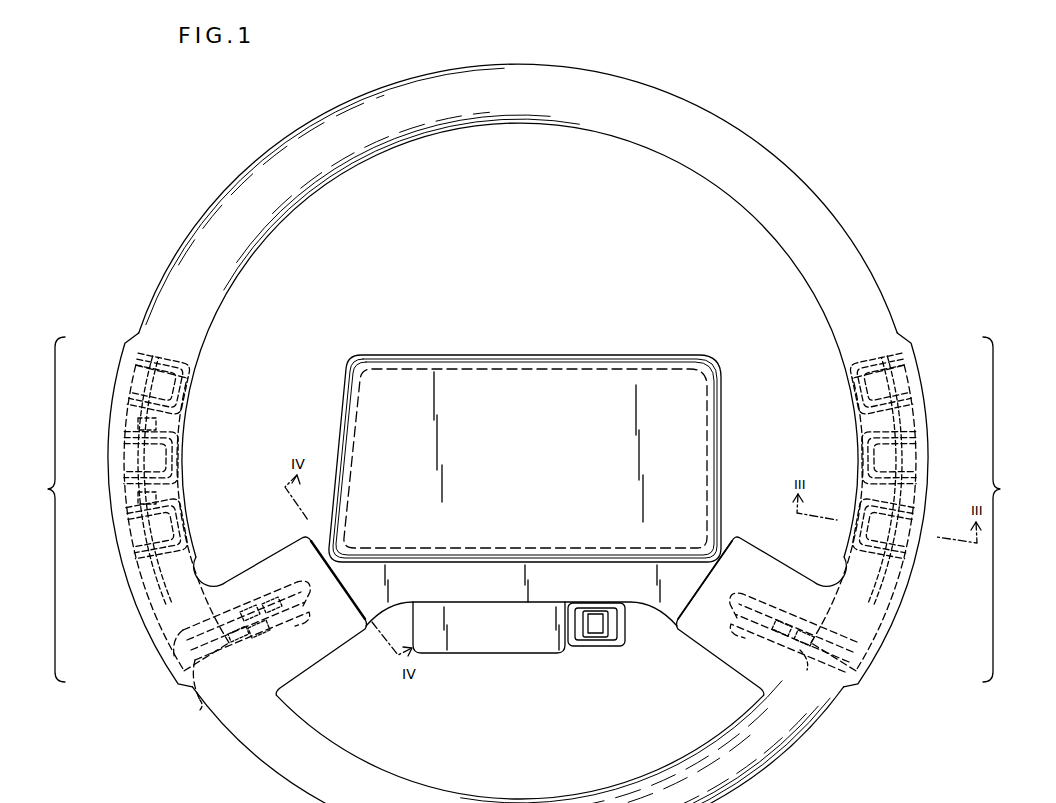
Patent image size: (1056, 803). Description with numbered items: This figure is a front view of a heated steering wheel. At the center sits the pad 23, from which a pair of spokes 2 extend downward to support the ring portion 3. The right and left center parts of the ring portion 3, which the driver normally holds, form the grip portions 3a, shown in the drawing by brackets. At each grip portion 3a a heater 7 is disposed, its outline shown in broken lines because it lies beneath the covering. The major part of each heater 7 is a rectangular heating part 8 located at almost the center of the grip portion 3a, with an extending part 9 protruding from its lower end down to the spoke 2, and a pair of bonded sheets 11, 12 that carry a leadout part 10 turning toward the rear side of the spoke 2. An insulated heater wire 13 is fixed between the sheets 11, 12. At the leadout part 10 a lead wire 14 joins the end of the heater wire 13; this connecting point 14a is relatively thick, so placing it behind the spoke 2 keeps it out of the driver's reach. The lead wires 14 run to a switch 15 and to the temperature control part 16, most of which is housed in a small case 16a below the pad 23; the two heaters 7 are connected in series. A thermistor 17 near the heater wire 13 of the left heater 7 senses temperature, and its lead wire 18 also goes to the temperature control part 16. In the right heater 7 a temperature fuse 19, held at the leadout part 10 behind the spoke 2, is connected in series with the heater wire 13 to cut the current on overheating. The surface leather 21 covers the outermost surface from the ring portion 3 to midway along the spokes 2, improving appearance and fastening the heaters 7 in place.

The spokes 2 is at (367, 628).
The ring portion 3 is at (760, 138).
The grip portions 3a is at (526, 509).
The heater 7 is at (198, 410).
The heating part 8 is at (188, 510).
The extending part 9 is at (146, 621).
The leadout part 10 is at (280, 627).
The sheet 11 is at (258, 643).
The sheet 12 is at (250, 665).
The heater wire 13 is at (198, 378).
The lead wire 14 is at (293, 583).
The connecting point 14a is at (262, 622).
The switch 15 is at (597, 644).
The temperature control part 16 is at (453, 645).
The case 16a is at (515, 645).
The thermistor 17 is at (193, 463).
The lead wire 18 is at (200, 703).
The temperature fuse 19 is at (807, 670).
The surface leather 21 is at (864, 260).
The pad 23 is at (517, 364).